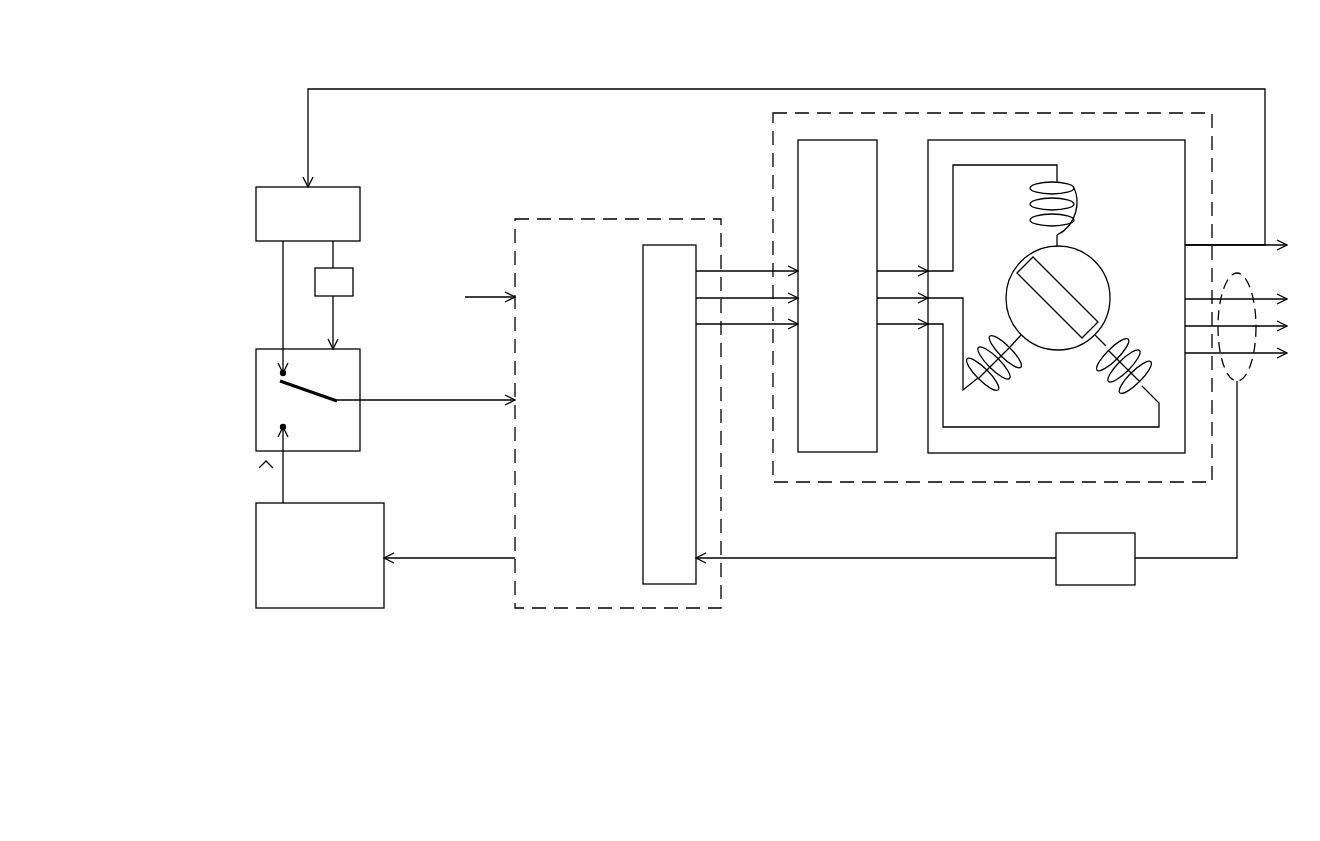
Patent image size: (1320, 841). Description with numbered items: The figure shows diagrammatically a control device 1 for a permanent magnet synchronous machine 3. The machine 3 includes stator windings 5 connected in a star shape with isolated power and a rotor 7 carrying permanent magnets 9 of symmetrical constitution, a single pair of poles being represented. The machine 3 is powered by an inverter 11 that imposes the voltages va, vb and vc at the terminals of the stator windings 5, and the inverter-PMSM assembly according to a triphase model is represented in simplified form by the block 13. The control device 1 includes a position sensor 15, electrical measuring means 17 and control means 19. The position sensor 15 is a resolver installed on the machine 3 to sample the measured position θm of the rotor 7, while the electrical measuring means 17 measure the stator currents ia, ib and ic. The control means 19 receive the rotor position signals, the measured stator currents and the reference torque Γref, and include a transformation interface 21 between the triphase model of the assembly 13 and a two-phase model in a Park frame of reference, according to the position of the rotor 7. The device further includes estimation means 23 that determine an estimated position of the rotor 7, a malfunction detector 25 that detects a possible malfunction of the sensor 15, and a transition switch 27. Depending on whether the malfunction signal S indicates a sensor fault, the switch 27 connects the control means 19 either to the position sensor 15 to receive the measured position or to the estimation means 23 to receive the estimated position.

The control device 1 is at (457, 650).
The permanent magnet synchronous machine 3 is at (1063, 140).
The stator windings 5 is at (1084, 192).
The rotor 7 is at (1098, 274).
The permanent magnets 9 is at (1034, 272).
The inverter 11 is at (840, 440).
The inverter-PMSM assembly 13 is at (915, 113).
The position sensor 15 is at (300, 220).
The electrical measuring means 17 is at (1100, 560).
The control means 19 is at (580, 229).
The transformation interface 21 is at (660, 481).
The estimation means 23 is at (300, 570).
The malfunction detector 25 is at (345, 286).
The transition switch 27 is at (300, 416).